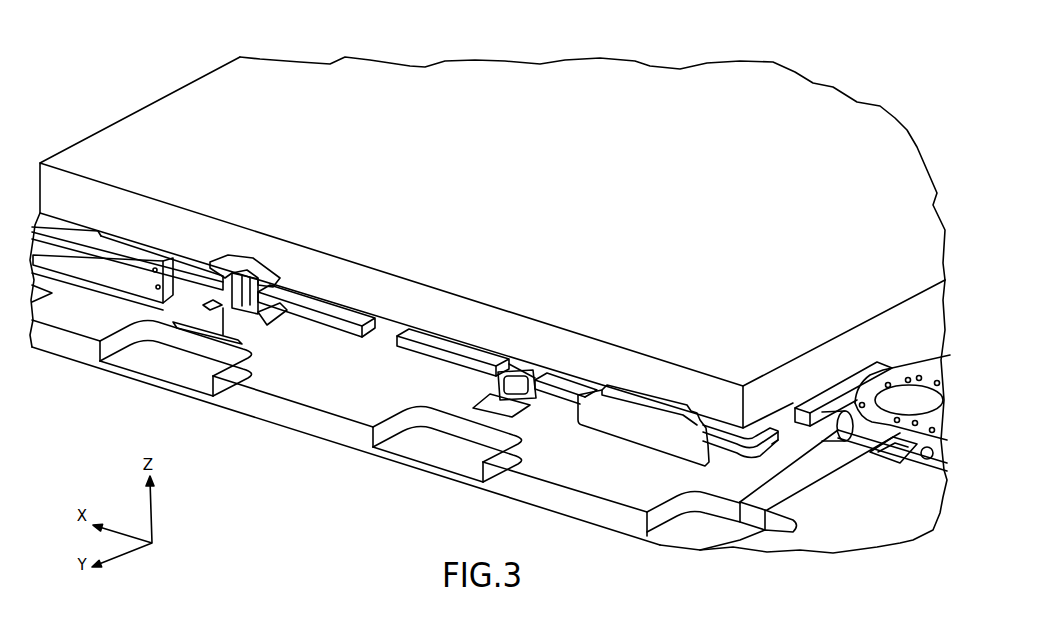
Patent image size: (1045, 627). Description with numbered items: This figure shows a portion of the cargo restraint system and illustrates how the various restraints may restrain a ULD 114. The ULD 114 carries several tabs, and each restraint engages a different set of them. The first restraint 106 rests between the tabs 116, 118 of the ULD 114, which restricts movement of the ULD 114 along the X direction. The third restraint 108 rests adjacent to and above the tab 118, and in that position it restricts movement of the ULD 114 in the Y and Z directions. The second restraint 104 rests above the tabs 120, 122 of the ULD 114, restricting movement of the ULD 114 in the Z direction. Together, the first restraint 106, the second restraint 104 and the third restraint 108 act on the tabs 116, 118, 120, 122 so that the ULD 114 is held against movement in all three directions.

The second restraint 104 is at (259, 313).
The first restraint 106 is at (500, 387).
The third restraint 108 is at (617, 428).
The ULD 114 is at (770, 382).
The tab 116 is at (453, 345).
The tab 118 is at (581, 385).
The tab 120 is at (333, 312).
The tab 122 is at (178, 262).